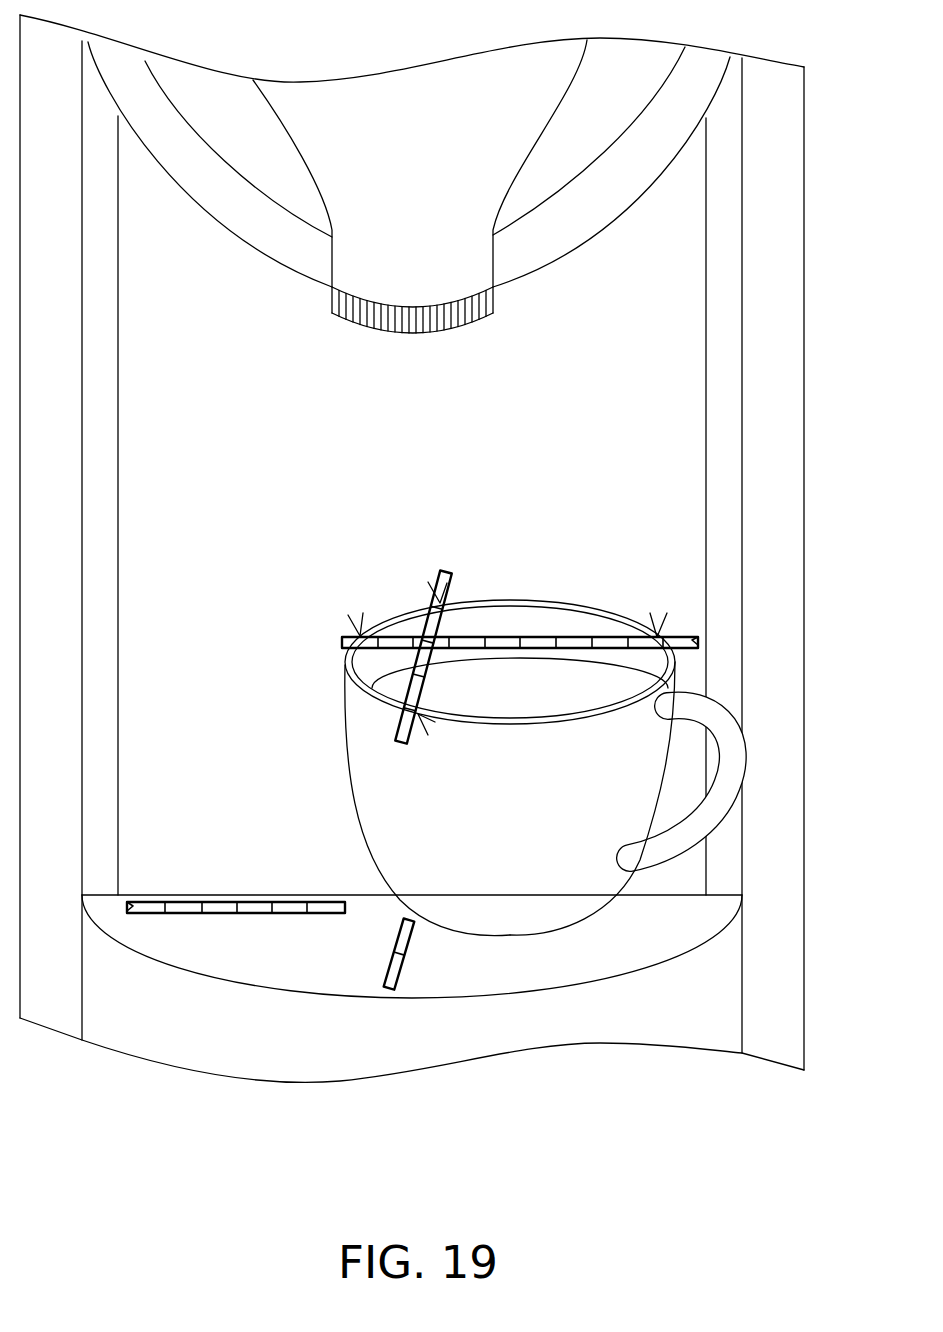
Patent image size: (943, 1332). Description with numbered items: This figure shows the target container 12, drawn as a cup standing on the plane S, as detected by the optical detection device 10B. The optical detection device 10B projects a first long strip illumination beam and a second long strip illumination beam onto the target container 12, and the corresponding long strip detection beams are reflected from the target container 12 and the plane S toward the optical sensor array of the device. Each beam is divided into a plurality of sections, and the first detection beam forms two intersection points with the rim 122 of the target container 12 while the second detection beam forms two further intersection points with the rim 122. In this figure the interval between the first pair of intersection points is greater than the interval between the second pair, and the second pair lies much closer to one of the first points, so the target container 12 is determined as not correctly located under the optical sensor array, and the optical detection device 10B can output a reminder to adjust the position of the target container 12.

The optical detection device 10B is at (446, 153).
The target container 12 is at (530, 889).
The rim 122 is at (508, 725).
The plane S is at (620, 955).